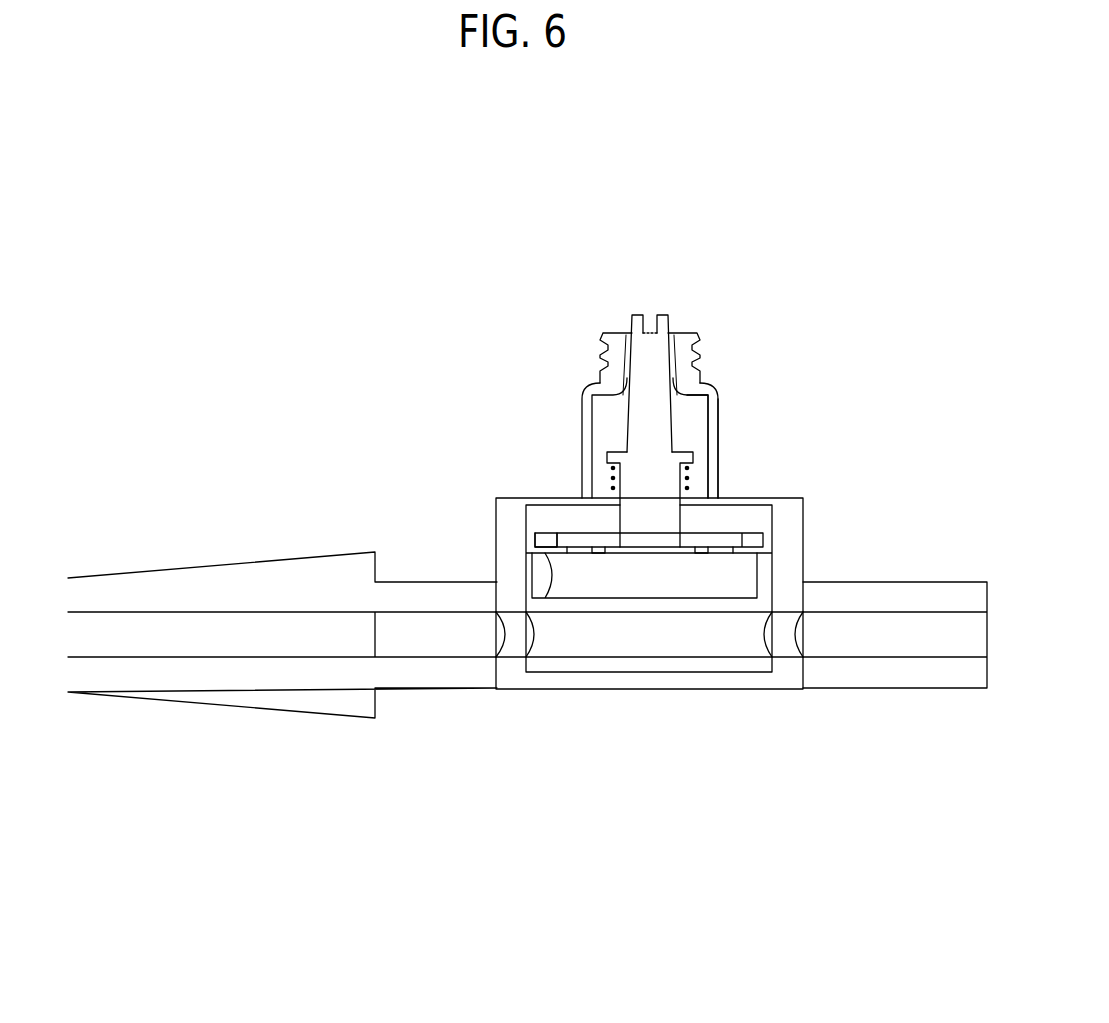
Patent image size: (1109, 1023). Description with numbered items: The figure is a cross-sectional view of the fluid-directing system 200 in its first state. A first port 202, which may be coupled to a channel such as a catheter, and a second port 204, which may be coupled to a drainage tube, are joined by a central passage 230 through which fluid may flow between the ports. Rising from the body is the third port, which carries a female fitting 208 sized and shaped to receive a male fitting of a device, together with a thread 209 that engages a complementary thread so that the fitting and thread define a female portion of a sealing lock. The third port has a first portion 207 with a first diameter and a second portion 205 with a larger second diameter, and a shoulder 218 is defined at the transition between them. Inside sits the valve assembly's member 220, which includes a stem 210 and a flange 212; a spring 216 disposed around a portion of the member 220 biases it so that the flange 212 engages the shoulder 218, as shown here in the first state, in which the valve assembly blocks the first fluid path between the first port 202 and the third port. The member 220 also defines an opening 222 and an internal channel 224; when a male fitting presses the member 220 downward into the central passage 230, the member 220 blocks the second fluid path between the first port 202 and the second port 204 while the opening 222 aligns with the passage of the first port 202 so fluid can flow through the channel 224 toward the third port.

The system 200 is at (345, 380).
The first port 202 is at (188, 703).
The second port 204 is at (887, 688).
The second portion 205 is at (720, 425).
The first portion 207 is at (698, 373).
The female fitting 208 is at (643, 315).
The thread 209 is at (697, 352).
The stem 210 is at (707, 400).
The flange 212 is at (607, 455).
The spring 216 is at (608, 468).
The shoulder 218 is at (598, 383).
The member 220 is at (527, 552).
The opening 222 is at (530, 553).
The channel 224 is at (722, 580).
The central passage 230 is at (692, 650).